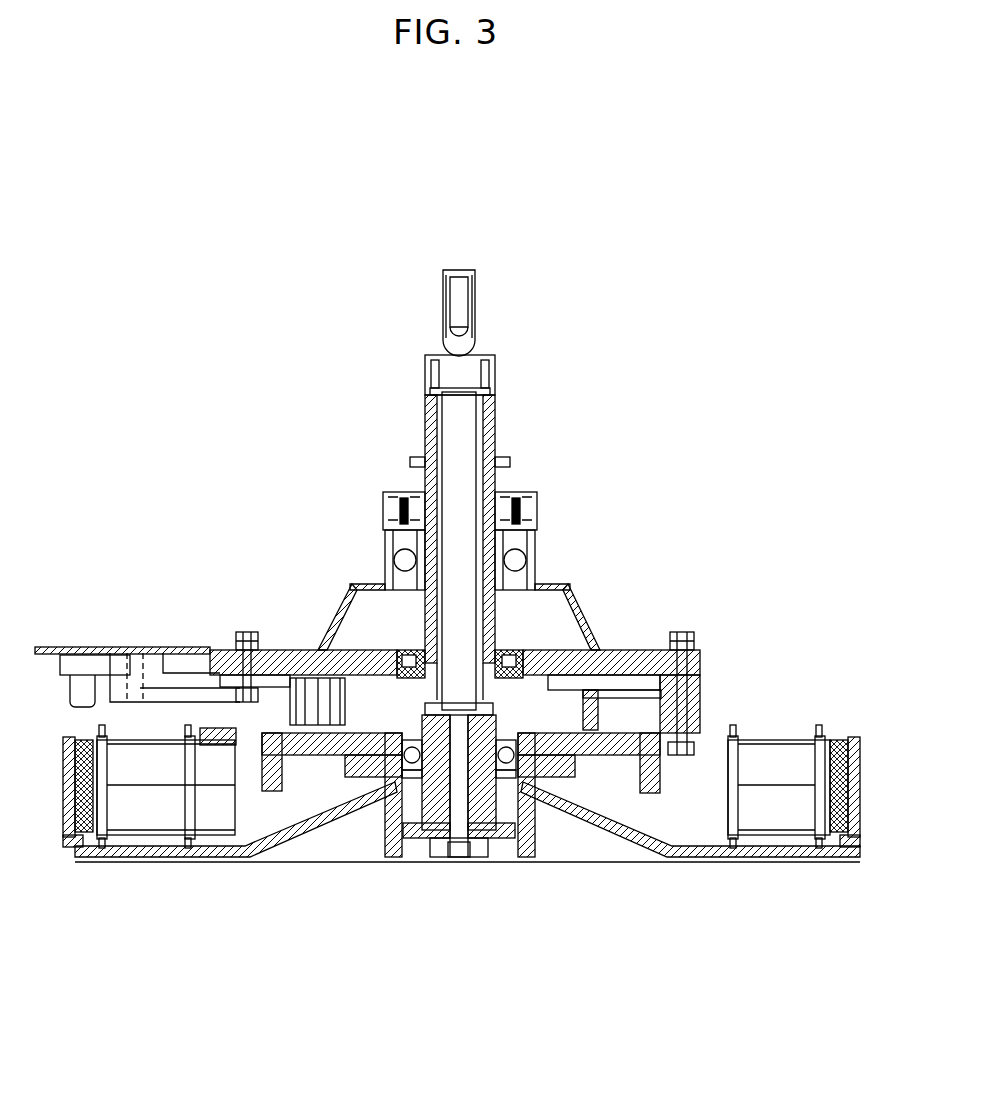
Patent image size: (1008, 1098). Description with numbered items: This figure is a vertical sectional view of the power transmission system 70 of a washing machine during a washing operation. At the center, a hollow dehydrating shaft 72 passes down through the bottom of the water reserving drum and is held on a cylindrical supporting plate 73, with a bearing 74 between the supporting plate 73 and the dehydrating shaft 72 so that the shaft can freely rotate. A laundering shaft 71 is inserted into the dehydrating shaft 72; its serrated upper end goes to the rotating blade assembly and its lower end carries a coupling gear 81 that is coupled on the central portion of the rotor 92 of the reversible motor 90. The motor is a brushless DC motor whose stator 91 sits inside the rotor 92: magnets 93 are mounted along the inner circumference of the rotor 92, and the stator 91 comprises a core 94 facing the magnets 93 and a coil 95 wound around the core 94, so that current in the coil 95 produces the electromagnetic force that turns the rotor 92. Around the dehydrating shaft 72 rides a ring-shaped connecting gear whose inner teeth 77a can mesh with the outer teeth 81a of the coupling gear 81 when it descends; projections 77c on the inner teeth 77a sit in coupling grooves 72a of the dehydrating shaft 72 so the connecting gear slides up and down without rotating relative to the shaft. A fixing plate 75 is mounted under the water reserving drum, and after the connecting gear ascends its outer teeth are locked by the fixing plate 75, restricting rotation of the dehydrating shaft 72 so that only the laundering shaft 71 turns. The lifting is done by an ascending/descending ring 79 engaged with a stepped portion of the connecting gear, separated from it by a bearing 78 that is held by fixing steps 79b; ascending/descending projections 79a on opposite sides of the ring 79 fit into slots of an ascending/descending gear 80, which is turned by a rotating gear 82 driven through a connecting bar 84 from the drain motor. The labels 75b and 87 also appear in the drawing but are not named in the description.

The power transmission system 70 is at (527, 380).
The laundering shaft 71 is at (470, 362).
The dehydrating shaft 72 is at (491, 432).
The coupling grooves 72a is at (498, 655).
The supporting plate 73 is at (513, 562).
The bearing 74 is at (478, 574).
The fixing plate 75 is at (642, 650).
The plate boss 75b is at (550, 648).
The inner teeth 77a is at (356, 650).
The projections 77c is at (388, 648).
The bearing 78 is at (318, 650).
The ascending/descending ring 79 is at (532, 772).
The ascending/descending projections 79a is at (318, 828).
The fixing steps 79b is at (586, 672).
The ascending/descending gear 80 is at (690, 672).
The coupling gear 81 is at (418, 832).
The outer teeth 81a is at (402, 832).
The rotating gear 82 is at (300, 752).
The connecting bar 84 is at (187, 690).
The bolt 87 is at (135, 650).
The reversible motor 90 is at (652, 868).
The stator 91 is at (488, 745).
The rotor 92 is at (860, 857).
The magnets 93 is at (860, 742).
The core 94 is at (755, 750).
The coil 95 is at (755, 728).